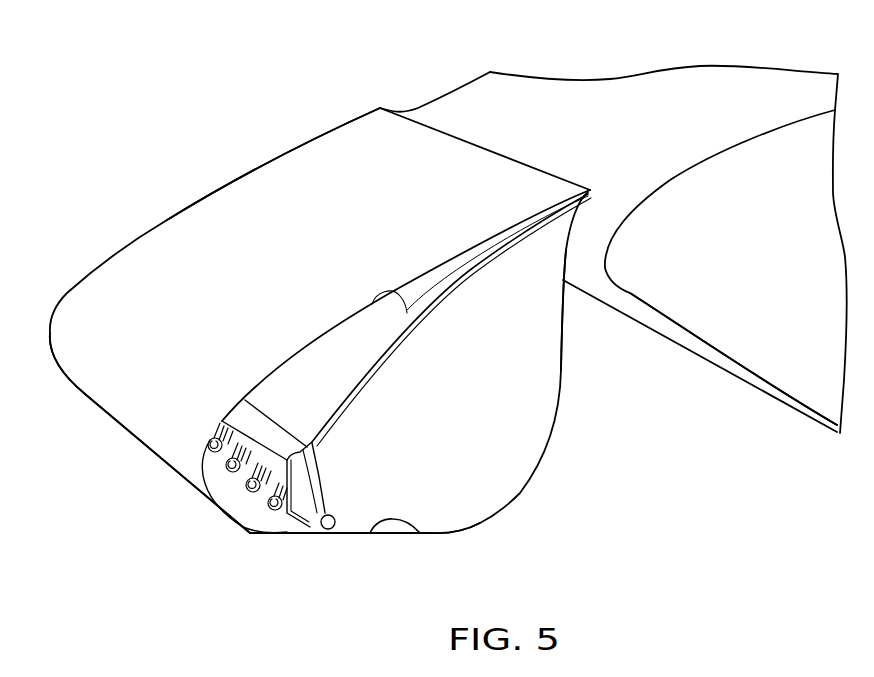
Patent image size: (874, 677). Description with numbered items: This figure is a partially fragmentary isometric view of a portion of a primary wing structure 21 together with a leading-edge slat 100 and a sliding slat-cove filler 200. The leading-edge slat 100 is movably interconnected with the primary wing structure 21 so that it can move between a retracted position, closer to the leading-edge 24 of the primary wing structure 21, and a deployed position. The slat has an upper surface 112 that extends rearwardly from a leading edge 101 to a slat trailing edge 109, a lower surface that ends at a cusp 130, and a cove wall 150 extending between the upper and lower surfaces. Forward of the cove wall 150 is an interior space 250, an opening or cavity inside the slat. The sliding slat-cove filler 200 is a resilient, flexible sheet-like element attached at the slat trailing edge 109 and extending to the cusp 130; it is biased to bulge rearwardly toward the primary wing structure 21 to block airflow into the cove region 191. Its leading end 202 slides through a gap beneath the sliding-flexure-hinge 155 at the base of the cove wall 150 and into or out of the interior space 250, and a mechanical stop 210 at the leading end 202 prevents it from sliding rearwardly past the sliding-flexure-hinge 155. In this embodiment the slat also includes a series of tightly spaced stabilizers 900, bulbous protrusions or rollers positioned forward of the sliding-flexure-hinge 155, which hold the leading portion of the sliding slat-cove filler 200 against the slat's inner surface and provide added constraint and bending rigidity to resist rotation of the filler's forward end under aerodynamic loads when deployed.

The leading-edge slat 100 is at (90, 251).
The leading edge 101 is at (100, 410).
The slat trailing edge 109 is at (397, 110).
The upper surface 112 is at (233, 197).
The leading-edge 24 is at (485, 93).
The primary wing structure 21 is at (708, 337).
The sliding slat-cove filler 200 is at (563, 455).
The cove region 191 is at (460, 430).
The cusp 130 is at (343, 536).
The leading end 202 is at (417, 533).
The cove wall 150 is at (390, 342).
The interior space 250 is at (312, 400).
The sliding-flexure-hinge 155 is at (330, 507).
The mechanical stop 210 is at (293, 530).
The stabilizers 900 is at (228, 470).